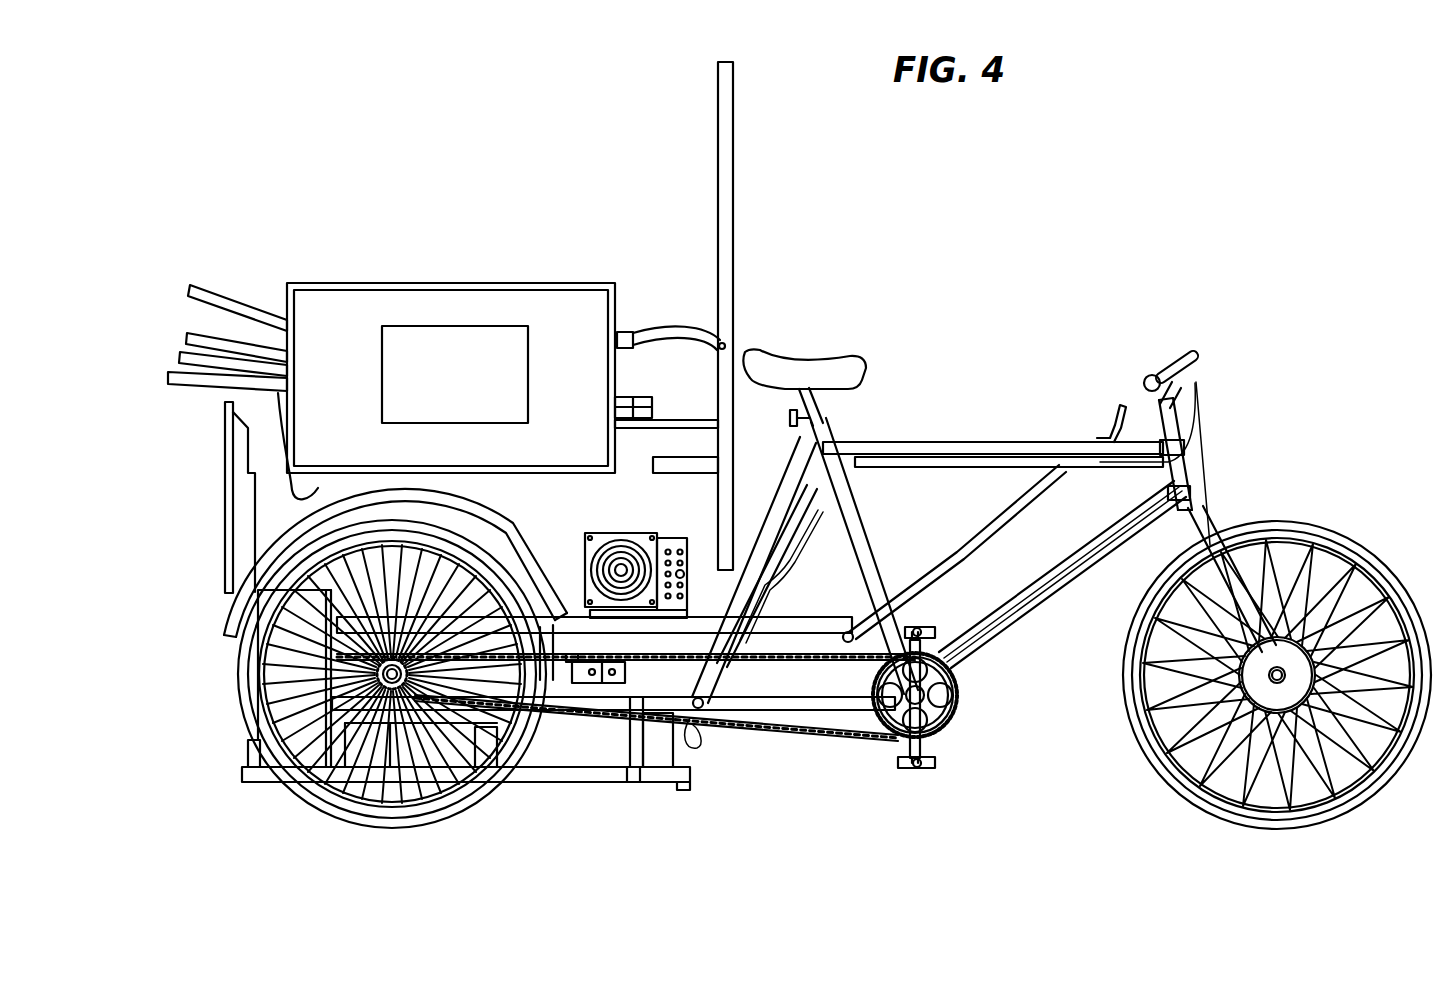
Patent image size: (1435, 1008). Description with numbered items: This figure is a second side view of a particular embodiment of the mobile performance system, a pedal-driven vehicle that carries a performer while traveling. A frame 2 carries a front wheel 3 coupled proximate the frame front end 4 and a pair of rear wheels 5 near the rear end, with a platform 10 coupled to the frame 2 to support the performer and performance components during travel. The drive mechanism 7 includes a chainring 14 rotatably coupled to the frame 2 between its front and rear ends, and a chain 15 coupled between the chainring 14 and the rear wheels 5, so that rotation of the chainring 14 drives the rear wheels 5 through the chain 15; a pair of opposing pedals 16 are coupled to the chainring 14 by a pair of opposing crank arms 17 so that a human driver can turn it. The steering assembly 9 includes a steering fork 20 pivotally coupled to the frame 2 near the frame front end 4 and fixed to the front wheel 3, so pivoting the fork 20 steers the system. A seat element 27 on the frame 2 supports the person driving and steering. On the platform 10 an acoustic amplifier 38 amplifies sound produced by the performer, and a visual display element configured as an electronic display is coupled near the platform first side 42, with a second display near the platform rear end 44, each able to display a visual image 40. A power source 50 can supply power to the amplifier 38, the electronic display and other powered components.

The frame 2 is at (832, 728).
The front wheel 3 is at (1346, 535).
The frame front end 4 is at (875, 734).
The pair of rear wheels 5 is at (247, 673).
The drive mechanism 7 is at (975, 688).
The steering assembly 9 is at (1156, 358).
The platform 10 is at (573, 625).
The chainring 14 is at (955, 712).
The chain 15 is at (773, 722).
The pedals 16 is at (926, 770).
The crank arms 17 is at (920, 750).
The steering fork 20 is at (1203, 527).
The seat element 27 is at (812, 378).
The acoustic amplifier 38 is at (637, 535).
The visual image 40 is at (455, 374).
The platform first side 42 is at (297, 502).
The platform rear end 44 is at (300, 637).
The power source 50 is at (367, 753).